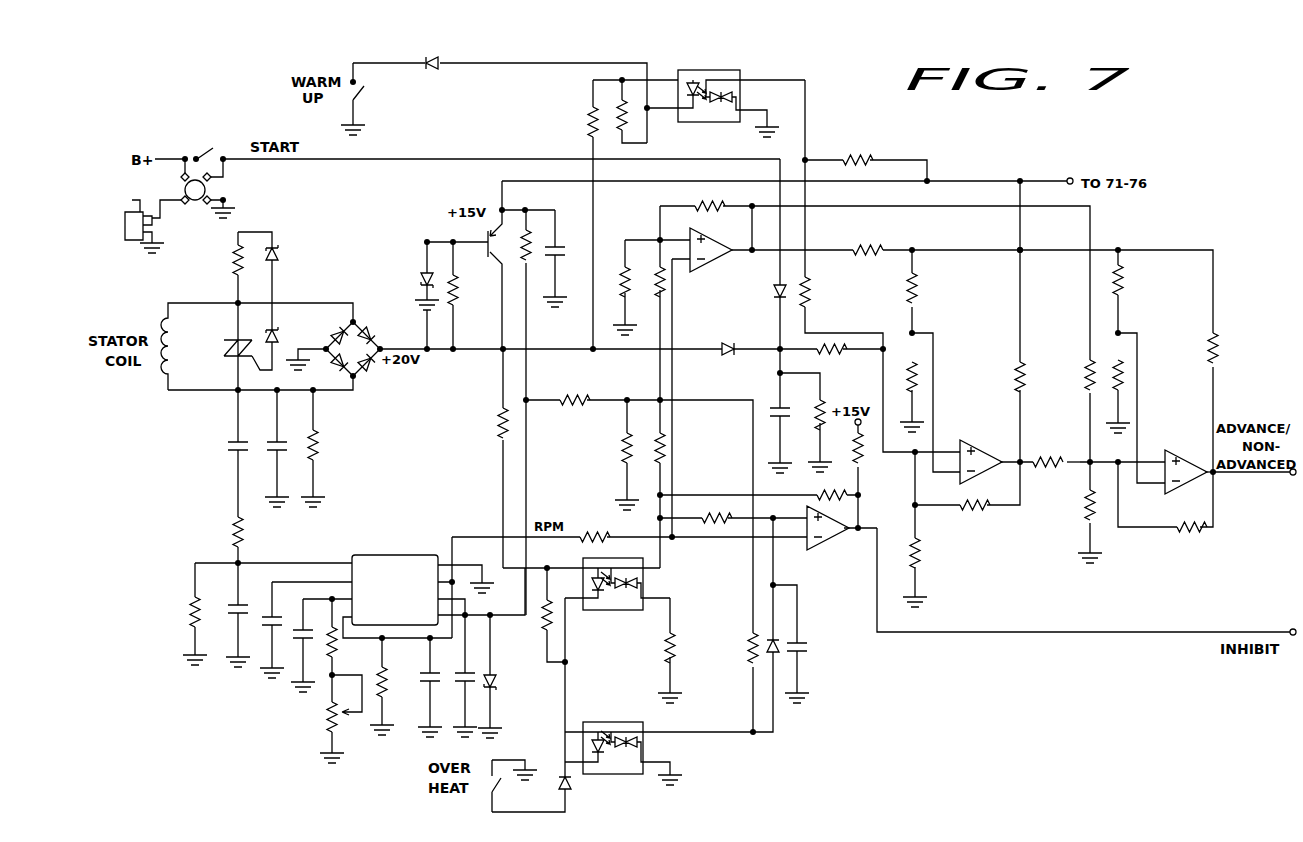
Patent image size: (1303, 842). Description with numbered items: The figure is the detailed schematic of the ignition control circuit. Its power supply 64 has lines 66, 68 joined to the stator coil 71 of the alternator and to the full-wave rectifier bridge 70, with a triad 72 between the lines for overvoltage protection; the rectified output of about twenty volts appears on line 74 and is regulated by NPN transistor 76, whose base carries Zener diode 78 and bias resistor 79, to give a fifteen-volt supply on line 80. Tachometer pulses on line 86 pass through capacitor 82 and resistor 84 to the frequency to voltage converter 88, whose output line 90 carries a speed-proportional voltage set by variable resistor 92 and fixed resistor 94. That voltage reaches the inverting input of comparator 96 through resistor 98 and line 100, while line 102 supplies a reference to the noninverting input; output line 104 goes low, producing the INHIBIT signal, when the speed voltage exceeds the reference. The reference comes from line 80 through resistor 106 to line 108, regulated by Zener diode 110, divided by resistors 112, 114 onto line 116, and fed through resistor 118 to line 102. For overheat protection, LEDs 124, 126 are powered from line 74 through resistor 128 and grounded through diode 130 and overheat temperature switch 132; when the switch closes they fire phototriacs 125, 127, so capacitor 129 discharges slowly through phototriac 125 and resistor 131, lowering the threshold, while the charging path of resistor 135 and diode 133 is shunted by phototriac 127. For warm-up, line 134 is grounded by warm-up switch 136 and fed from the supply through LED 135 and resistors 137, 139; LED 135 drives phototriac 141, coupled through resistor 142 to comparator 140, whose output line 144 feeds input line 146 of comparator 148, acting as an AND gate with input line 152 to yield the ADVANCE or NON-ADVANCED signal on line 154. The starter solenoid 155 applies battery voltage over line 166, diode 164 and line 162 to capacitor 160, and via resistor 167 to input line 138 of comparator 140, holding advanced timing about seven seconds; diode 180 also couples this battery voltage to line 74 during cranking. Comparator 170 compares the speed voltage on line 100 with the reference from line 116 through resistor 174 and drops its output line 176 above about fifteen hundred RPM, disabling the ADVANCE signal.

The power supply 64 is at (356, 282).
The line 66 is at (297, 304).
The line 68 is at (347, 395).
The full-wave rectifier bridge 70 is at (378, 371).
The stator coil 71 is at (160, 367).
The triad 72 is at (223, 356).
The line 74 is at (381, 339).
The NPN transistor 76 is at (497, 264).
The Zener diode 78 is at (430, 288).
The bias resistor 79 is at (456, 304).
The line 80 is at (568, 183).
The capacitor 82 is at (228, 447).
The resistor 84 is at (248, 532).
The line 86 is at (238, 484).
The frequency to voltage converter 88 is at (380, 555).
The output line 90 is at (466, 536).
The variable resistor 92 is at (330, 728).
The fixed resistor 94 is at (338, 648).
The comparator 96 is at (832, 546).
The resistor 98 is at (590, 534).
The line 100 is at (676, 287).
The line 102 is at (771, 518).
The output line 104 is at (878, 641).
The resistor 106 is at (555, 302).
The line 108 is at (529, 446).
The Zener diode 110 is at (502, 685).
The resistor 112 is at (572, 399).
The resistor 114 is at (624, 452).
The line 116 is at (710, 402).
The resistor 118 is at (658, 462).
The light emitting diode 124 is at (600, 599).
The phototriac 125 is at (645, 582).
The light emitting diode 126 is at (603, 755).
The phototriac 127 is at (645, 745).
The resistor 128 is at (498, 425).
The capacitor 129 is at (800, 646).
The diode 130 is at (578, 786).
The resistor 131 is at (668, 643).
The overheat temperature switch 132 is at (495, 787).
The diode 133 is at (775, 658).
The line 134 is at (397, 62).
The LED 135 is at (686, 90).
The warm-up switch 136 is at (364, 88).
The resistor 137 is at (615, 134).
The input line 138 is at (883, 393).
The resistor 139 is at (590, 128).
The comparator 140 is at (975, 442).
The phototriac 141 is at (735, 95).
The resistor 142 is at (812, 294).
The output line 144 is at (1028, 460).
The input line 146 is at (1072, 466).
The comparator 148 is at (1180, 452).
The input line 152 is at (1090, 316).
The output line 154 is at (1228, 478).
The starter solenoid 155 is at (195, 200).
The capacitor 160 is at (776, 407).
The line 162 is at (780, 323).
The diode 164 is at (777, 293).
The line 166 is at (410, 160).
The resistor 167 is at (830, 353).
The comparator 170 is at (725, 229).
The resistor 174 is at (659, 283).
The output line 176 is at (868, 208).
The diode 180 is at (726, 356).